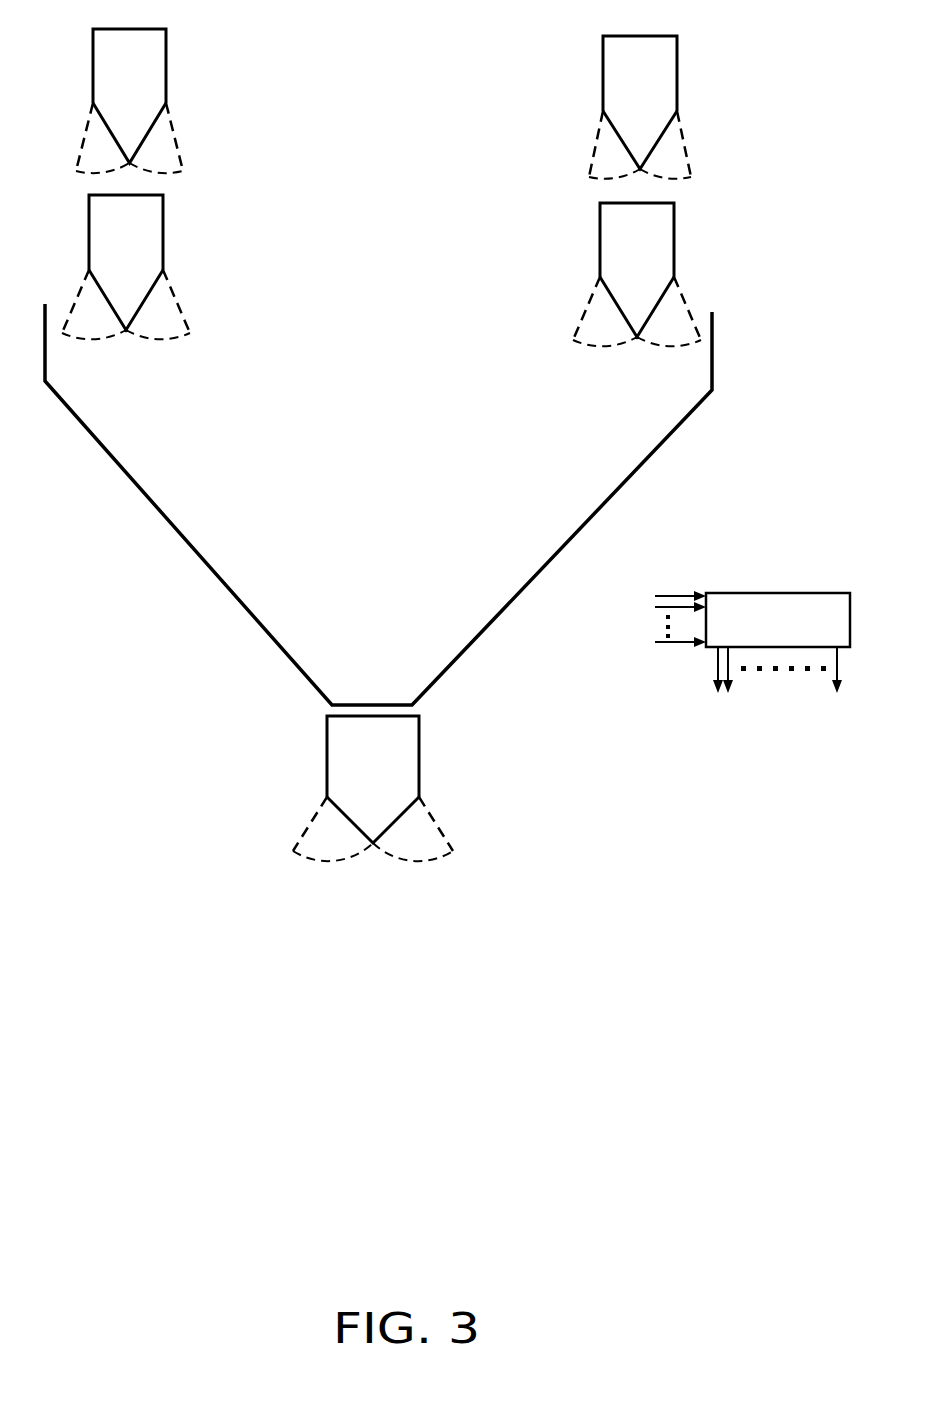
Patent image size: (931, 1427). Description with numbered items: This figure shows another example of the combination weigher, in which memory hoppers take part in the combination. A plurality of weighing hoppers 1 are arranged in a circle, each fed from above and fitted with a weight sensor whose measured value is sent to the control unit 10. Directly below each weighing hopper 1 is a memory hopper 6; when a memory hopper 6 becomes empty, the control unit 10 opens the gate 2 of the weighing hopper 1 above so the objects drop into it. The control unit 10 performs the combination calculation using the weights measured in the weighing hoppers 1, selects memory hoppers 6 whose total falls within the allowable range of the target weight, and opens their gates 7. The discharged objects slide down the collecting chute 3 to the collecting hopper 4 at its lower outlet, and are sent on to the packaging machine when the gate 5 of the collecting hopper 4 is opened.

The weighing hopper 1 is at (166, 50).
The gate 2 is at (147, 135).
The collecting chute 3 is at (638, 470).
The collecting hopper 4 is at (419, 747).
The gate 5 is at (388, 828).
The memory hopper 6 is at (163, 217).
The gate 7 is at (143, 302).
The control unit 10 is at (780, 593).